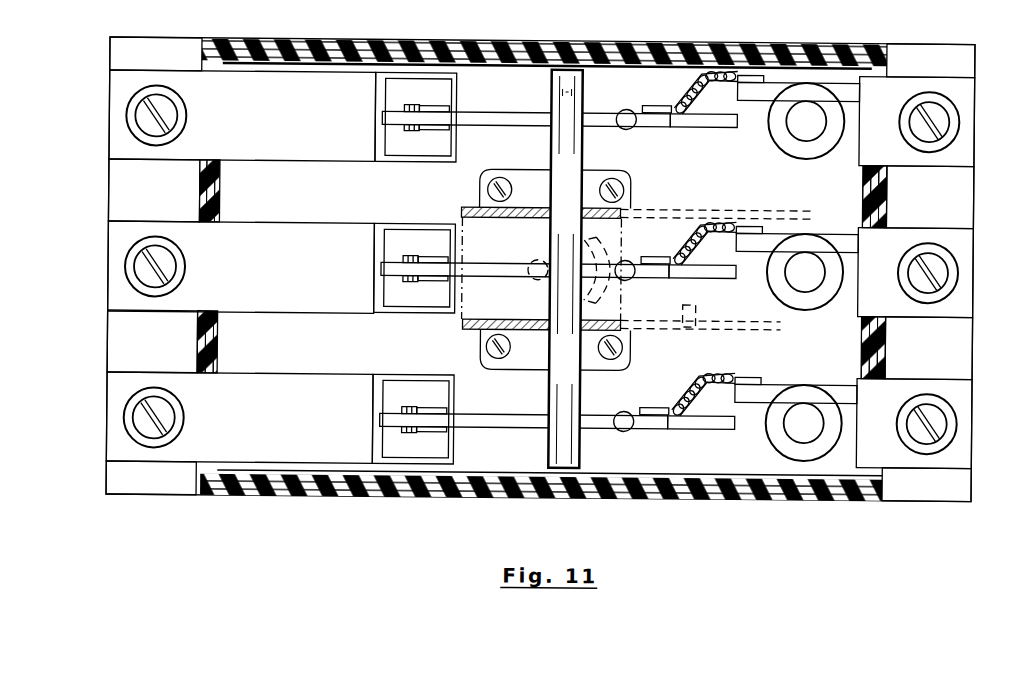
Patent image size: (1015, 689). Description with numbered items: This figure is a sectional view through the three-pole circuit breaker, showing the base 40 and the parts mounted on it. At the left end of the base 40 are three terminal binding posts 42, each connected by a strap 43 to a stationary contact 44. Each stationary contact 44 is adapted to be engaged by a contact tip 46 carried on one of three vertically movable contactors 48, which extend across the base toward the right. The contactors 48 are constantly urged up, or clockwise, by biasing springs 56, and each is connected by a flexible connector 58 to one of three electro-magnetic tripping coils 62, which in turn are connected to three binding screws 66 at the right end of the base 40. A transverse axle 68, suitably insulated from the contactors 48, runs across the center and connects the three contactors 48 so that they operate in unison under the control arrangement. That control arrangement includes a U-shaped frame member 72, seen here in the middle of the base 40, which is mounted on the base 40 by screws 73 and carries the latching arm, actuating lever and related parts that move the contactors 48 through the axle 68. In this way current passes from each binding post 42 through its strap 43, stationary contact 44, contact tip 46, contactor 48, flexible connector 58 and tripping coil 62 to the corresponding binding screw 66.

The base 40 is at (238, 495).
The terminal binding posts 42 is at (127, 111).
The straps 43 is at (282, 157).
The stationary contacts 44 is at (414, 103).
The contact tips 46 is at (429, 128).
The contactors 48 is at (517, 109).
The biasing springs 56 is at (633, 125).
The flexible connectors 58 is at (692, 79).
The electro-magnetic tripping coils 62 is at (775, 133).
The binding screws 66 is at (960, 119).
The transverse axle 68 is at (551, 447).
The U-shaped frame member 72 is at (541, 167).
The screws 73 is at (489, 187).